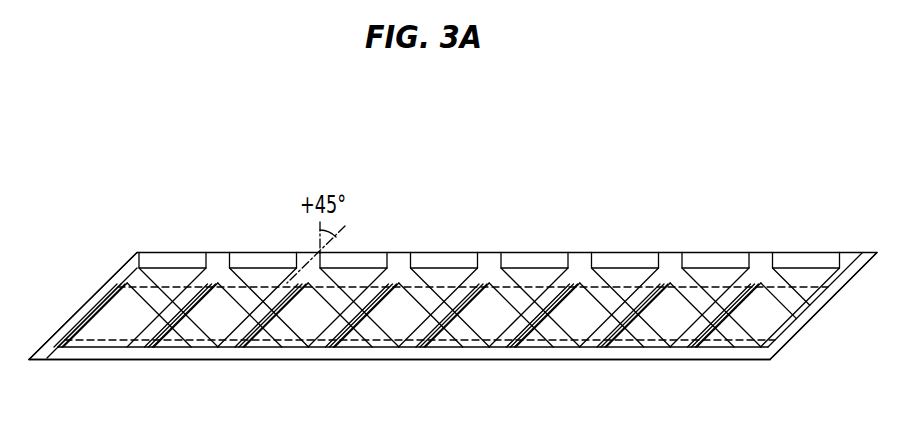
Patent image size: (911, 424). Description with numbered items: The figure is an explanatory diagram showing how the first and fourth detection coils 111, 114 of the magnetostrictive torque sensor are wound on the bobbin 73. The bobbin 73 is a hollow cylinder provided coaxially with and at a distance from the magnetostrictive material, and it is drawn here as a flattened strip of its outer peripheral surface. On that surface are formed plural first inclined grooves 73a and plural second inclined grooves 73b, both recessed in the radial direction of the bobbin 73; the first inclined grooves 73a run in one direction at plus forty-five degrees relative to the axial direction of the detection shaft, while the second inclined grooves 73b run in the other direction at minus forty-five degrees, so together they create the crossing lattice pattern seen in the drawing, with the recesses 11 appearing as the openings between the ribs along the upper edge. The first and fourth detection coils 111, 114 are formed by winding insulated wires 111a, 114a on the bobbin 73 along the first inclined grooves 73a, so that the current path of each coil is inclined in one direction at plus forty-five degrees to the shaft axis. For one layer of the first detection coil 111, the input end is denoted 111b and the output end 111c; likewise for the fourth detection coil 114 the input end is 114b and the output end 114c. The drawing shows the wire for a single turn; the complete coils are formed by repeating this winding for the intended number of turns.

The recess / opening between ribs 11 is at (223, 274).
The bobbin 73 is at (800, 347).
The first inclined grooves 73a is at (483, 281).
The second inclined grooves 73b is at (590, 278).
The first detection coil 111 is at (443, 351).
The fourth detection coil 114 is at (570, 348).
The insulated wire 111a is at (399, 381).
The insulated wire 114a is at (363, 346).
The input end of first detection coil 111b is at (82, 262).
The input end of fourth detection coil 114b is at (137, 252).
The output end of first detection coil 111c is at (807, 268).
The output end of fourth detection coil 114c is at (862, 252).